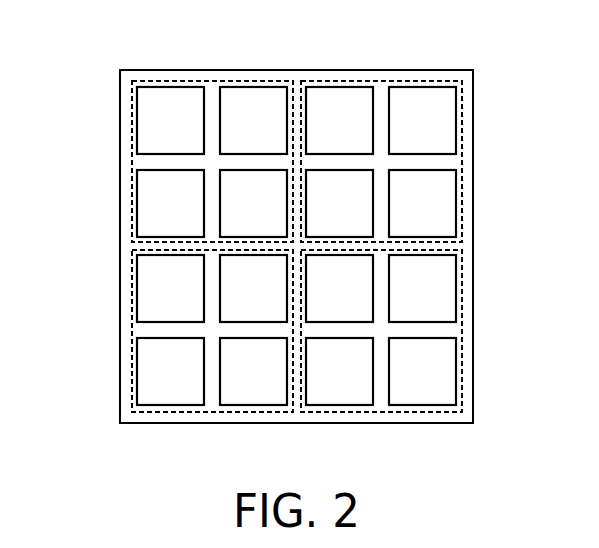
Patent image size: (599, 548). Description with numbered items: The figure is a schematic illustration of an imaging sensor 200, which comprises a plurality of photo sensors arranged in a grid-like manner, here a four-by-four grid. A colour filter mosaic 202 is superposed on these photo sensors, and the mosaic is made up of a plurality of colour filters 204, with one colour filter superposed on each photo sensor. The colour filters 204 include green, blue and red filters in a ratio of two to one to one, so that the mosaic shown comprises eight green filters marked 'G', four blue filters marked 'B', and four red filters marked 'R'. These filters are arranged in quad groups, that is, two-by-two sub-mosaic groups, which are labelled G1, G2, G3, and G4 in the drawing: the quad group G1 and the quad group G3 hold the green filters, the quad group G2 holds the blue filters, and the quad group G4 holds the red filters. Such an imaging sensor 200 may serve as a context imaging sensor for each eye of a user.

The imaging sensor 200 is at (296, 211).
The colour filter mosaic 202 is at (297, 206).
The colour filters 204 is at (296, 246).
The quad group G1 is at (164, 161).
The quad group G2 is at (163, 331).
The quad group G3 is at (431, 331).
The quad group G4 is at (431, 161).